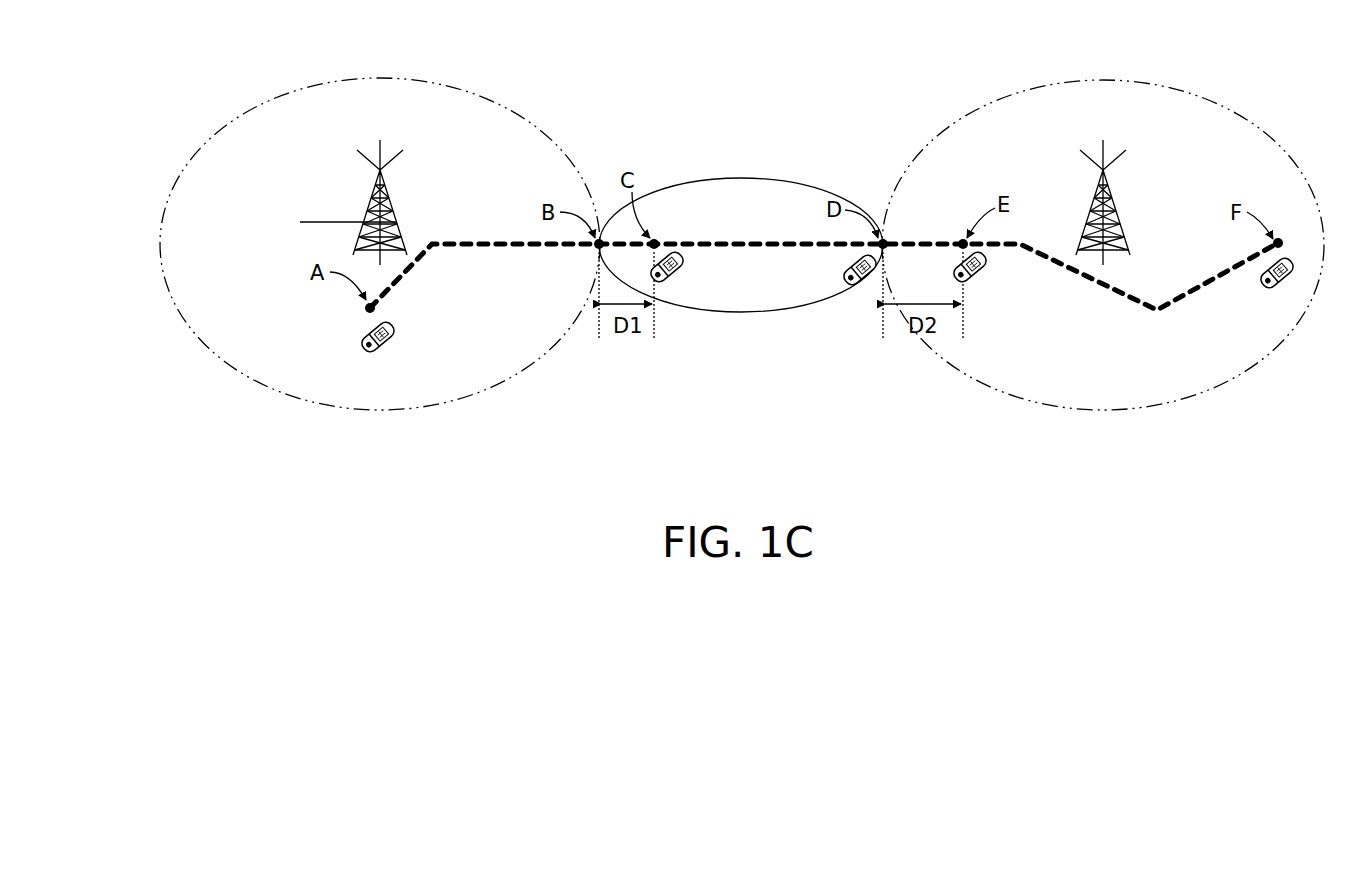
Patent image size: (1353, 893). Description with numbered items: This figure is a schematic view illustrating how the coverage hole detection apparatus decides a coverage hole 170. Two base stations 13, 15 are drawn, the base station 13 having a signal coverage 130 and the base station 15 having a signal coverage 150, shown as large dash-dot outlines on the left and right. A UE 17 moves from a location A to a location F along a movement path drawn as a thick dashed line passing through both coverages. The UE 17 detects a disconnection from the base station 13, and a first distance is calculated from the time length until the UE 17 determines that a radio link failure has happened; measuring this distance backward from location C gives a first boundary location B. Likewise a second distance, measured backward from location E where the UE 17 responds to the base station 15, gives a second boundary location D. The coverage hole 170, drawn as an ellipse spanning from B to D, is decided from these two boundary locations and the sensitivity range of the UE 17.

The signal coverage 130 is at (234, 115).
The signal coverage 150 is at (954, 115).
The coverage hole 170 is at (745, 176).
The base station 13 is at (396, 222).
The base station 15 is at (1114, 214).
The UE 17 is at (392, 338).